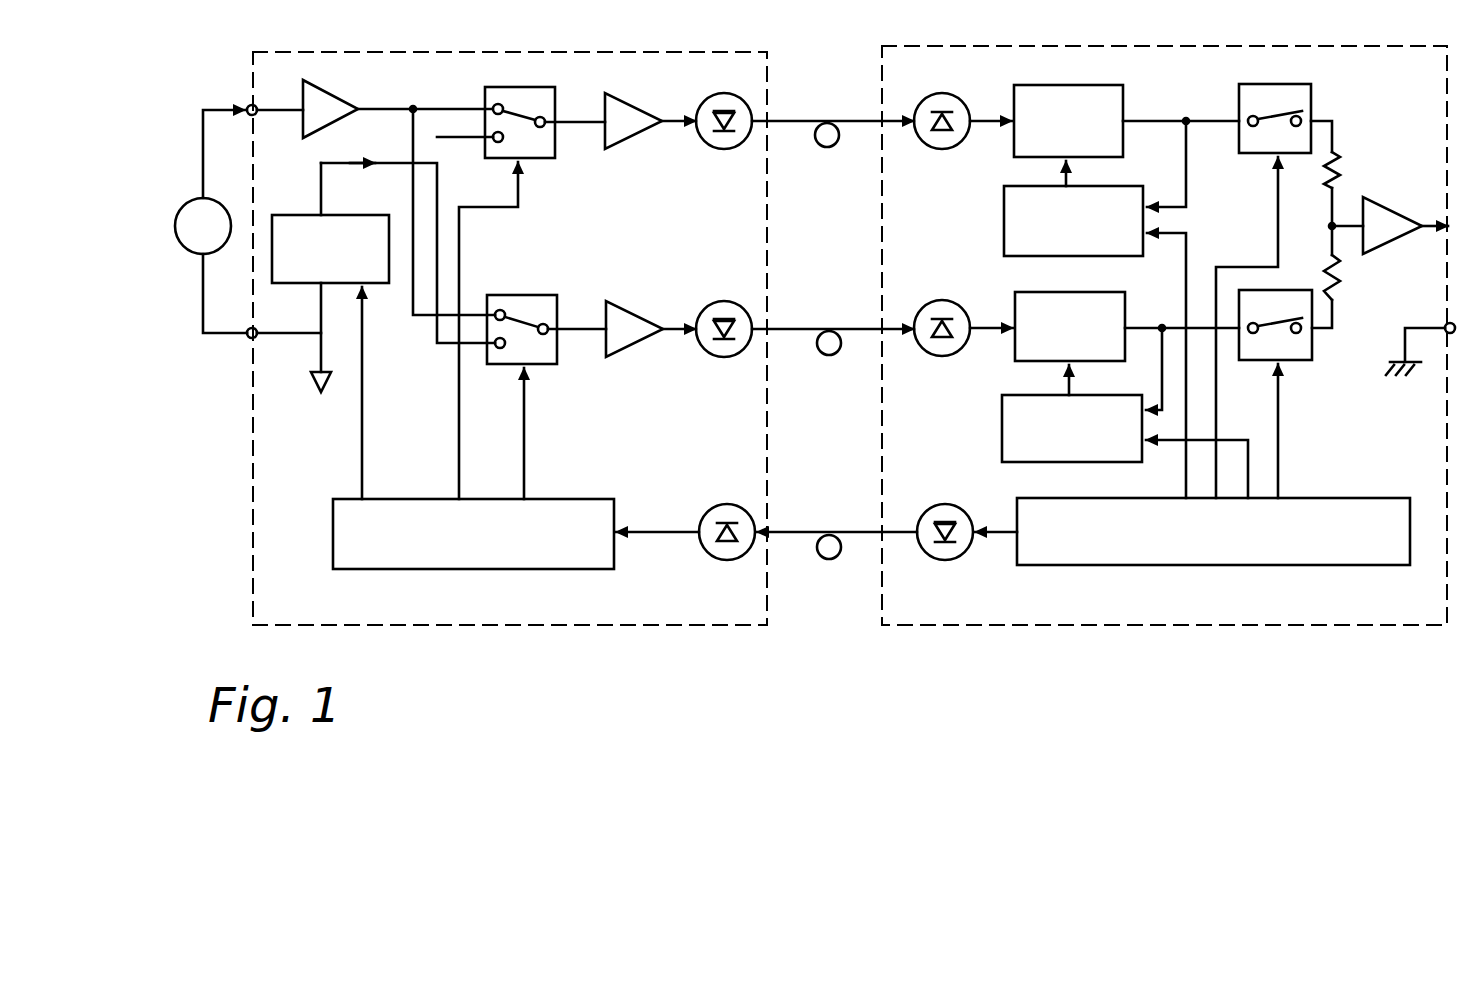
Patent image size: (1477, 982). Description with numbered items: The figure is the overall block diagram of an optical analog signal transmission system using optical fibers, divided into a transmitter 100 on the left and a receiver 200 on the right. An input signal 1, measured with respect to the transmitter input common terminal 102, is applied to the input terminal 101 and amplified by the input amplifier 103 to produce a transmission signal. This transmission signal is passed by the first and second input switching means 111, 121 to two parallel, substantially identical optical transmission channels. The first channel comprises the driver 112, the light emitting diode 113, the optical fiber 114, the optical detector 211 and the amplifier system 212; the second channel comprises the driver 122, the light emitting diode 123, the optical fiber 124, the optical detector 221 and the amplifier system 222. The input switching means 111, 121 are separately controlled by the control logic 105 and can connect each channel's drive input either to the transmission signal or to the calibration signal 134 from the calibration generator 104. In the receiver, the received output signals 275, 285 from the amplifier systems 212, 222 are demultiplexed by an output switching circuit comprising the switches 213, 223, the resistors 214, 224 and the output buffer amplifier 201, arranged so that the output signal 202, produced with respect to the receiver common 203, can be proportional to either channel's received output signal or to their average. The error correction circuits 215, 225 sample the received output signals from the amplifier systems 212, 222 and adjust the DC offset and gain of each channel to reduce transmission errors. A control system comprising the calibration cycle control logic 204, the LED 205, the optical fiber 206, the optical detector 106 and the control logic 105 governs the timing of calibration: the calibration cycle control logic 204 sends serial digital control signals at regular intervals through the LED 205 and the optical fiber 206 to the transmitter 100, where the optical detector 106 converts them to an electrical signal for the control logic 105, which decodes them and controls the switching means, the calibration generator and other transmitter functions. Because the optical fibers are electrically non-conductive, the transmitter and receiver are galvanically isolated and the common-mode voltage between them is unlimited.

The input signal 1 is at (209, 197).
The transmitter 100 is at (253, 580).
The input terminal 101 is at (258, 116).
The transmitter input common terminal 102 is at (258, 339).
The input amplifier 103 is at (337, 92).
The calibration generator 104 is at (328, 213).
The control logic 105 is at (448, 495).
The optical detector 106 is at (712, 503).
The first input switching means 111 is at (557, 107).
The driver 112 is at (635, 135).
The light emitting diode 113 is at (700, 102).
The optical fiber 114 is at (835, 112).
The second input switching means 121 is at (560, 300).
The driver 122 is at (635, 350).
The light emitting diode 123 is at (705, 305).
The optical fiber 124 is at (838, 322).
The calibration signal 134 is at (430, 337).
The receiver 200 is at (878, 568).
The output buffer amplifier 201 is at (1370, 197).
The output signal 202 is at (1438, 217).
The receiver common 203 is at (1440, 318).
The calibration cycle control logic 204 is at (1322, 498).
The LED 205 is at (938, 498).
The optical fiber 206 is at (832, 527).
The optical detector 211 is at (953, 93).
The amplifier system 212 is at (1127, 102).
The switch 213 is at (1313, 102).
The resistor 214 is at (1343, 162).
The error correction circuit 215 is at (1000, 195).
The optical detector 221 is at (955, 300).
The amplifier system 222 is at (1012, 357).
The switch 223 is at (1317, 343).
The resistor 224 is at (1345, 278).
The error correction circuit 225 is at (998, 448).
The received output signal 275 is at (1190, 140).
The received output signal 285 is at (1135, 318).